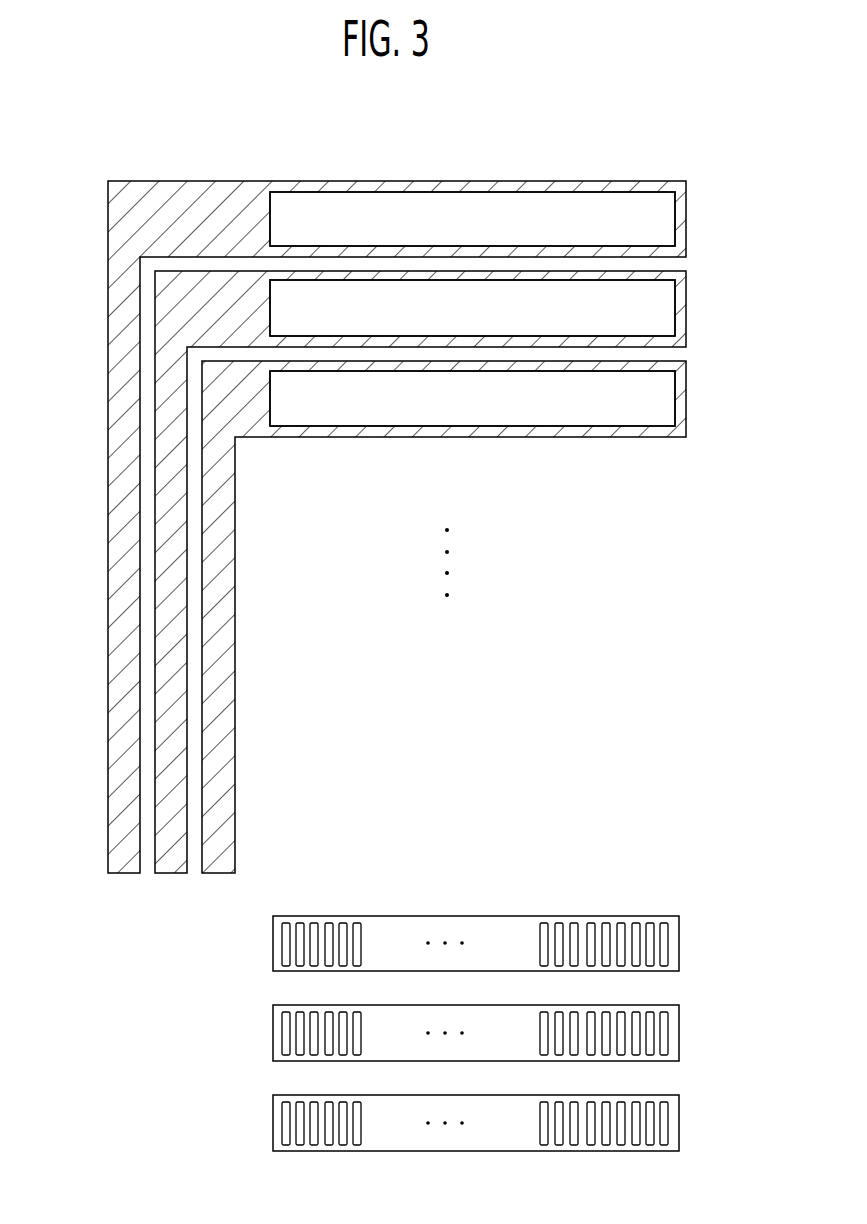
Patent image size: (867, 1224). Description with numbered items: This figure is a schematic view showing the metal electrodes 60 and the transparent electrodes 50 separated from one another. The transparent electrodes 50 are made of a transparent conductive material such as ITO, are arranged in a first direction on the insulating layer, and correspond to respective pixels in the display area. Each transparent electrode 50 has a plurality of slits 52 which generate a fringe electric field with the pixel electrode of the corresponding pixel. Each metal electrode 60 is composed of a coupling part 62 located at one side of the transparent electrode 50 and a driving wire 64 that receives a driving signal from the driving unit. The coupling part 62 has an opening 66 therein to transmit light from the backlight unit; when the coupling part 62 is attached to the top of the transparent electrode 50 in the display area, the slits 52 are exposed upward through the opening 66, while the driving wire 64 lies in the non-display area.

The transparent electrode 50 is at (476, 991).
The slit 52 is at (561, 940).
The metal electrode 60 is at (408, 488).
The coupling part 62 is at (352, 188).
The driving wire 64 is at (212, 666).
The opening 66 is at (528, 218).